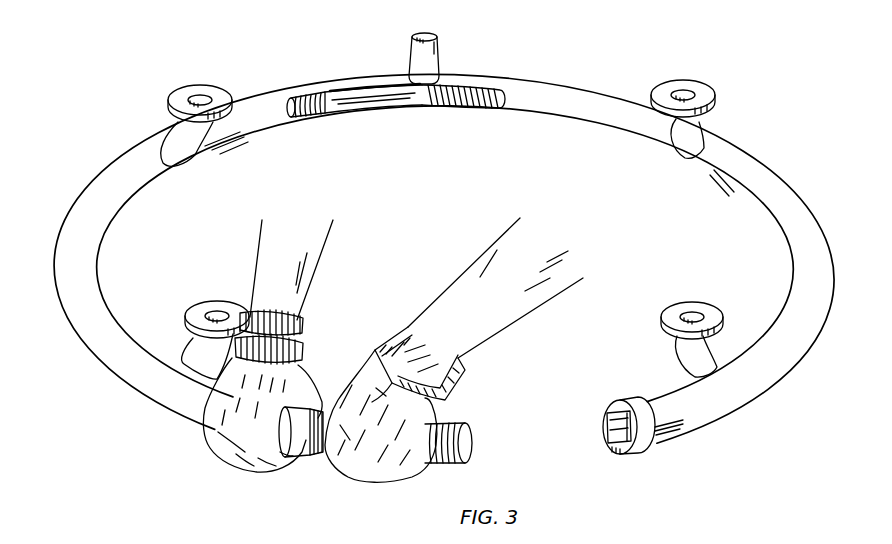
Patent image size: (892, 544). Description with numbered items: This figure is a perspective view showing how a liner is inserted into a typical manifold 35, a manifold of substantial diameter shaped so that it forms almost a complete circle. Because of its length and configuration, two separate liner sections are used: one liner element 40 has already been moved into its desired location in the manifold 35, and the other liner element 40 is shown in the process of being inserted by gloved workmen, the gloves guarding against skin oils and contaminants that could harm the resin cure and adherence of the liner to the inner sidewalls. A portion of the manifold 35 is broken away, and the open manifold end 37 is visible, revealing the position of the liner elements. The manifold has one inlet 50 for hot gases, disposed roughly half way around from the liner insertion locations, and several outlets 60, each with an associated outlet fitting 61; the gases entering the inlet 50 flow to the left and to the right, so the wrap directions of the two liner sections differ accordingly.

The manifold 35 is at (584, 87).
The hose end cap 37 is at (642, 440).
The liner element 40 is at (480, 110).
The inlet 50 is at (440, 53).
The outlet 60 is at (172, 134).
The washer 61 is at (200, 85).